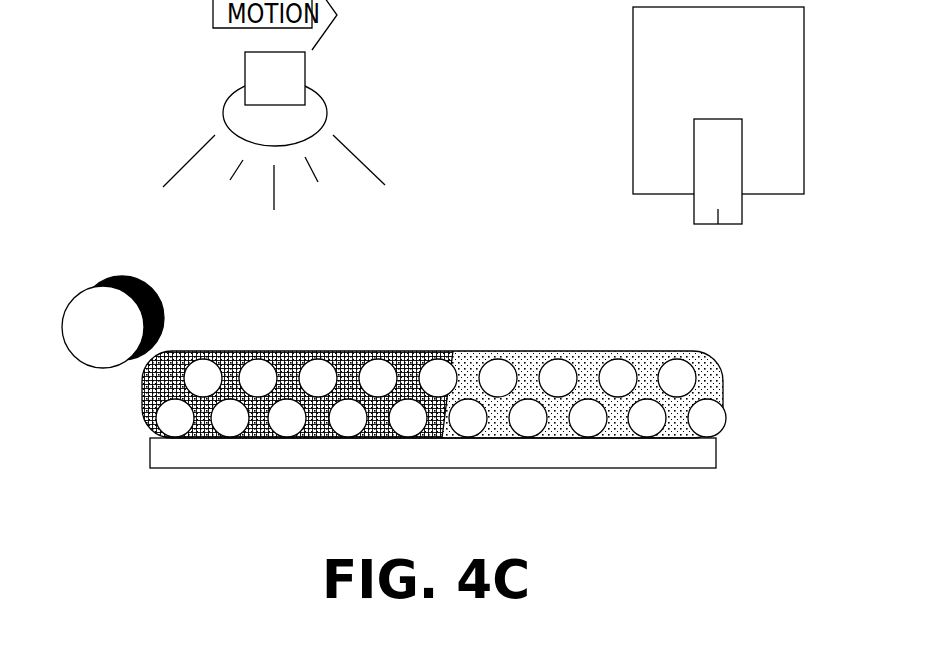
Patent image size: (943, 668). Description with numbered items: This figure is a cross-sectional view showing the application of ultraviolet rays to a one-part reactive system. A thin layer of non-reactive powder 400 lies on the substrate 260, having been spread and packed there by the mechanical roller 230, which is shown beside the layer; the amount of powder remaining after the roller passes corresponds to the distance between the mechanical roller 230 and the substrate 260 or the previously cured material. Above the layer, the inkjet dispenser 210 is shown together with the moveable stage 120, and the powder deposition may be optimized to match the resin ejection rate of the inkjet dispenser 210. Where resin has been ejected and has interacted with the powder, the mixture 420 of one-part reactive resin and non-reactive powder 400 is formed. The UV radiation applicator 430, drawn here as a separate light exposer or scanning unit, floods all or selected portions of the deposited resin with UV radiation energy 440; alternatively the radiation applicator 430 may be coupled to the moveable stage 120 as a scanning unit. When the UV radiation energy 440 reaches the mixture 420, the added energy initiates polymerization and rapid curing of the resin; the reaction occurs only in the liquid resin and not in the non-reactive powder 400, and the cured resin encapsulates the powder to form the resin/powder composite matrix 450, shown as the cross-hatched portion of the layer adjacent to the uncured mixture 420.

The moveable stage 120 is at (738, 55).
The inkjet dispenser 210 is at (707, 168).
The mechanical roller 230 is at (105, 327).
The substrate 260 is at (593, 468).
The non-reactive powder 400 is at (677, 378).
The mixture 420 is at (645, 352).
The UV radiation applicator 430 is at (225, 92).
The UV radiation energy 440 is at (370, 165).
The resin/powder composite matrix 450 is at (372, 346).